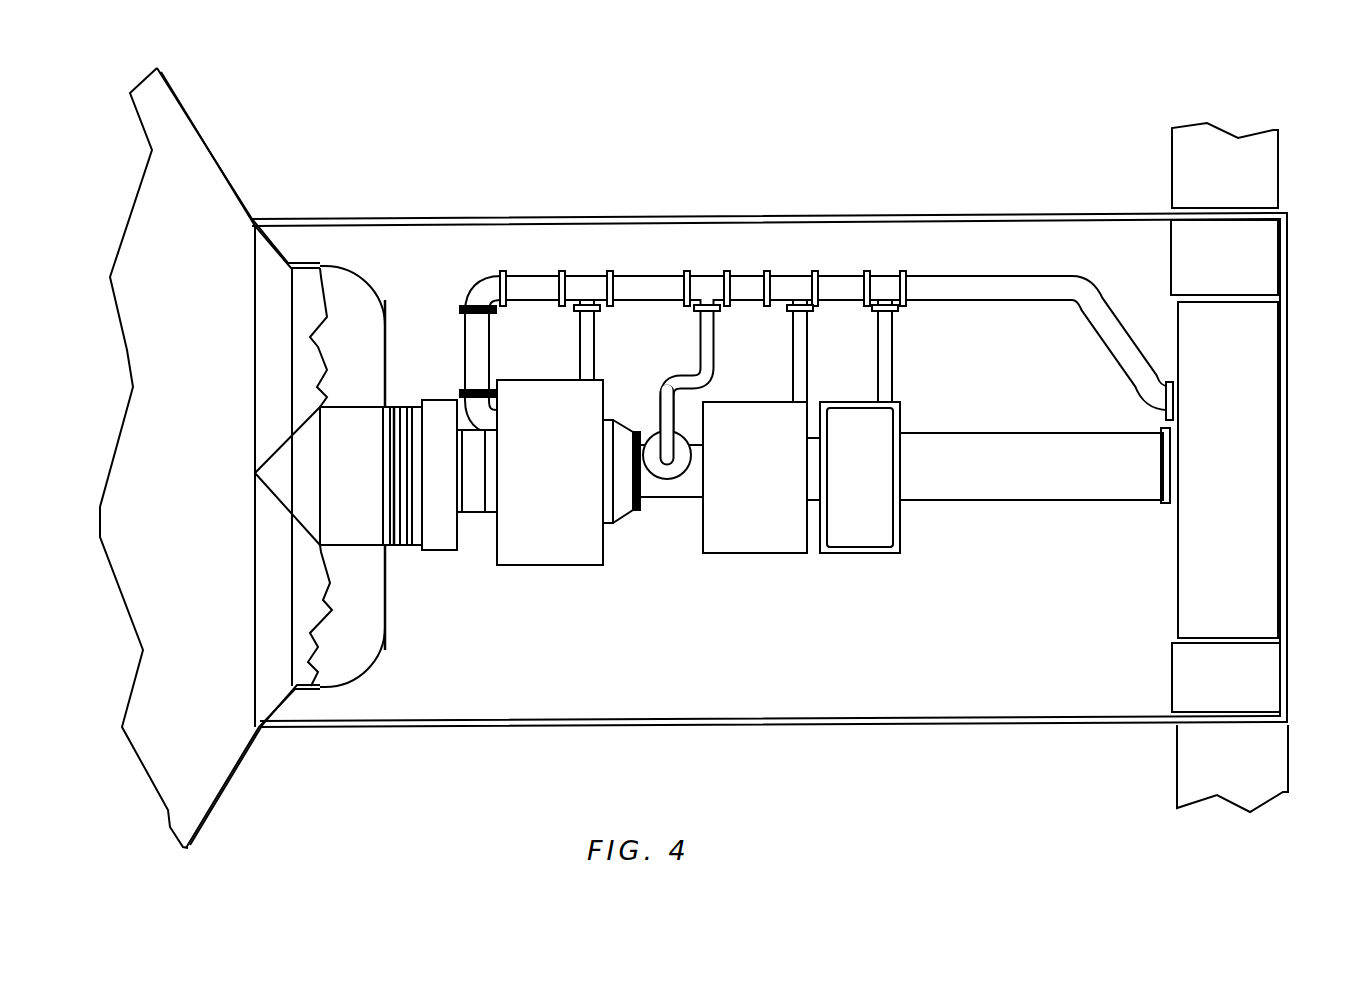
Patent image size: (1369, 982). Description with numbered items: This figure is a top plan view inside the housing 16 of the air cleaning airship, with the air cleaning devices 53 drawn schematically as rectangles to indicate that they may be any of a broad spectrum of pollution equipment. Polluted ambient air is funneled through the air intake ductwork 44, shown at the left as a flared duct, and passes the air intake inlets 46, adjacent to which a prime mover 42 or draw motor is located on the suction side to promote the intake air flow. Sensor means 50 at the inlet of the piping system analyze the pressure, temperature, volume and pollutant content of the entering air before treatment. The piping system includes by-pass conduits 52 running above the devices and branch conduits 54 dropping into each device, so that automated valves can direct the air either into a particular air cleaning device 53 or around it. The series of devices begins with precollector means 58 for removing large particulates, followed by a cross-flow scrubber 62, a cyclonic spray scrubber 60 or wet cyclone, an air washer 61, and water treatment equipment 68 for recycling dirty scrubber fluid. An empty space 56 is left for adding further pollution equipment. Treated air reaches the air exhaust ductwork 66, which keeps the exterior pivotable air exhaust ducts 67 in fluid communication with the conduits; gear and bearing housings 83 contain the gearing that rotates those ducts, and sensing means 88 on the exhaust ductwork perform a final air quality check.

The housing 16 is at (756, 210).
The prime mover 42 is at (352, 507).
The air intake ductwork 44 is at (205, 125).
The air intake inlets 46 is at (303, 345).
The sensor means 50 is at (409, 415).
The by-pass conduits 52 is at (642, 274).
The air cleaning devices 53 is at (653, 510).
The conduits 54 is at (702, 333).
The empty space 56 is at (997, 432).
The precollector means 58 is at (441, 525).
The cyclonic spray scrubber 60 is at (652, 445).
The air washer 61 is at (776, 532).
The cross-flow scrubber 62 is at (545, 545).
The air exhaust ductwork 66 is at (1236, 540).
The air exhaust ducts 67 is at (1186, 163).
The water treatment equipment 68 is at (866, 532).
The gear and bearing housings 83 is at (1258, 273).
The sensing means 88 is at (1176, 507).